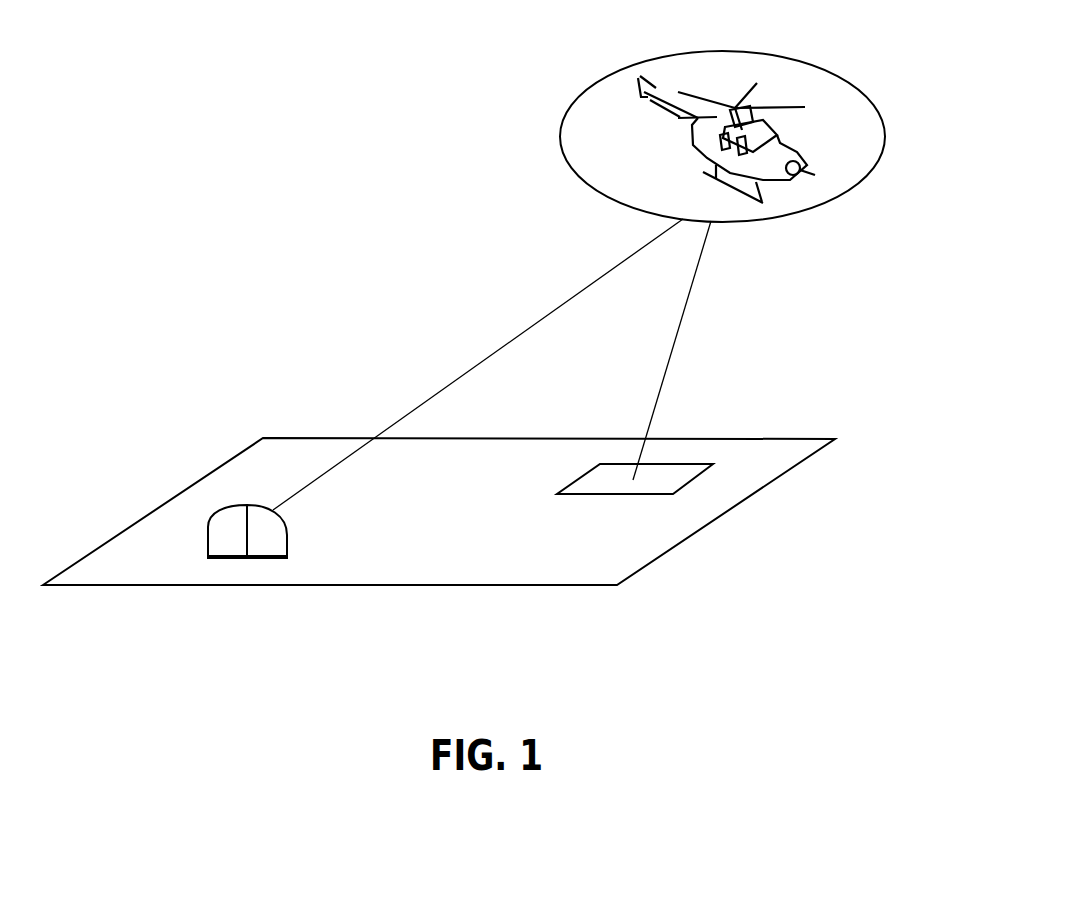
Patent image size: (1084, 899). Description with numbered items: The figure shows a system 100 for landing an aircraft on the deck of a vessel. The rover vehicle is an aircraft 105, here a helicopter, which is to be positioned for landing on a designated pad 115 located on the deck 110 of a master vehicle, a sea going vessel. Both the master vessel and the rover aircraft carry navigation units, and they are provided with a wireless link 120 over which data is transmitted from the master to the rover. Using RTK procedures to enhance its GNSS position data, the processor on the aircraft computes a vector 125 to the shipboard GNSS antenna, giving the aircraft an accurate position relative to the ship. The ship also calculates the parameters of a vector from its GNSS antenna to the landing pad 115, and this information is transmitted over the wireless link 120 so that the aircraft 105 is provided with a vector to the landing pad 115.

The helicopter landing system 100 is at (864, 53).
The aircraft 105 is at (588, 80).
The deck 110 is at (755, 452).
The designated pad 115 is at (660, 470).
The wireless link 120 is at (578, 288).
The vector 125 is at (691, 302).